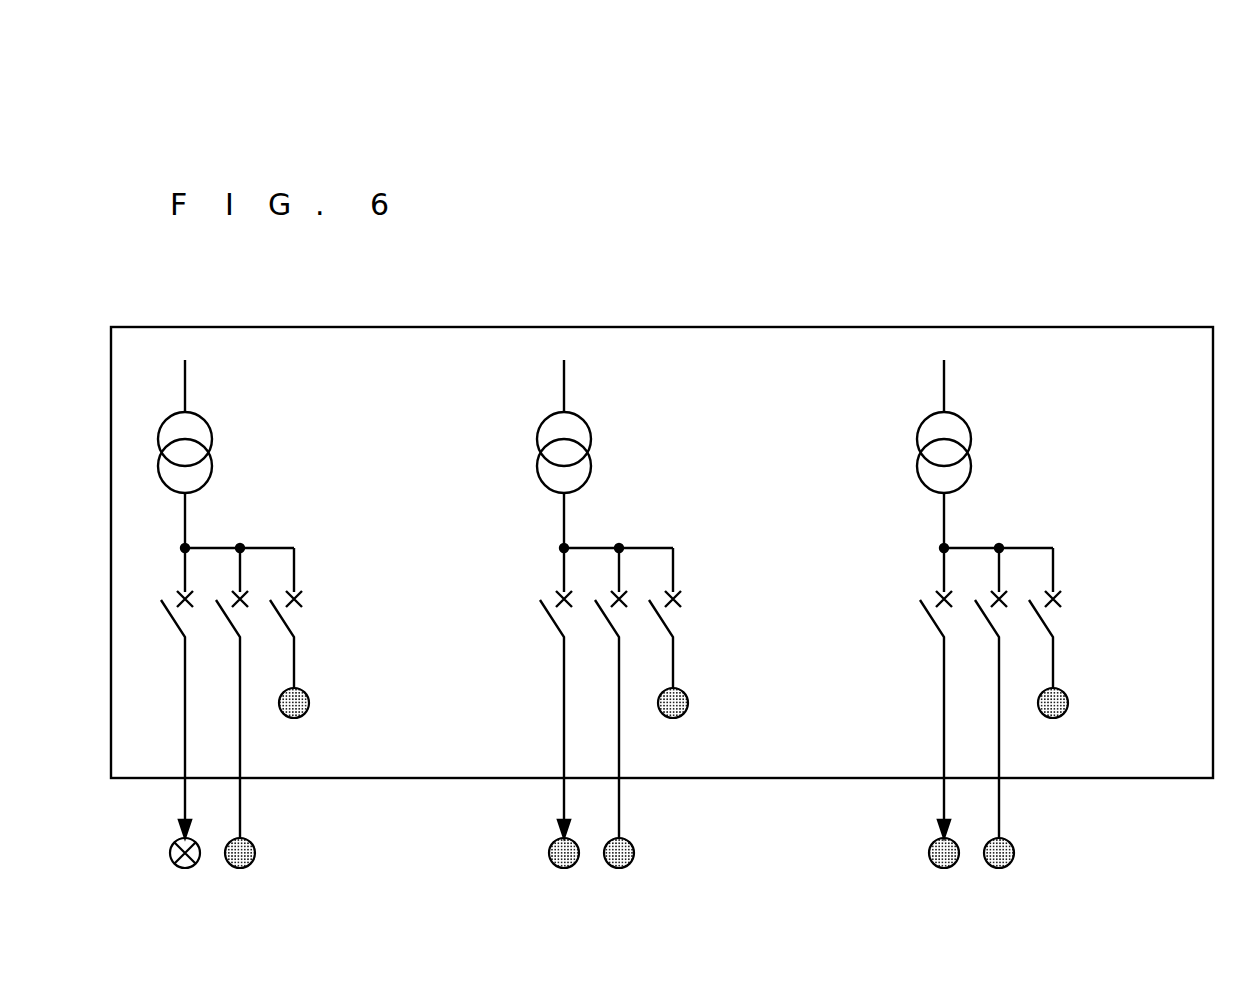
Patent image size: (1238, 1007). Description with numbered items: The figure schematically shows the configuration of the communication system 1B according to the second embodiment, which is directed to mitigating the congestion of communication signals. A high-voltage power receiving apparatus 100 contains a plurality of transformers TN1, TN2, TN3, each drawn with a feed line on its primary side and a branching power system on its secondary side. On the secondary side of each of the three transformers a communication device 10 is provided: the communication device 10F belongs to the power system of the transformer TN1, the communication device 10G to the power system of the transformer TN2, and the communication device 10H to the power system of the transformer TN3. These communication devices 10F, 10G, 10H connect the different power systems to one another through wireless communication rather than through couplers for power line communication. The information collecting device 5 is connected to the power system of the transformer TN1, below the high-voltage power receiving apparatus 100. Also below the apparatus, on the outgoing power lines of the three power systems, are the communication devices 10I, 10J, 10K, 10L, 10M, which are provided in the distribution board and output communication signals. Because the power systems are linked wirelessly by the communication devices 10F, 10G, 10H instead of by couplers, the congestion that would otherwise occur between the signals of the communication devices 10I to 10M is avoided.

The communication system 1B is at (978, 263).
The high-voltage power receiving apparatus 100 is at (662, 327).
The transformer TN1 is at (158, 437).
The transformer TN2 is at (537, 437).
The transformer TN3 is at (917, 437).
The information collecting device 5 is at (170, 854).
The communication device 10 is at (712, 779).
The communication device 10F is at (309, 705).
The communication device 10G is at (688, 705).
The communication device 10H is at (1068, 705).
The communication device 10I is at (255, 855).
The communication device 10J is at (549, 853).
The communication device 10K is at (634, 855).
The communication device 10L is at (929, 853).
The communication device 10M is at (1014, 855).